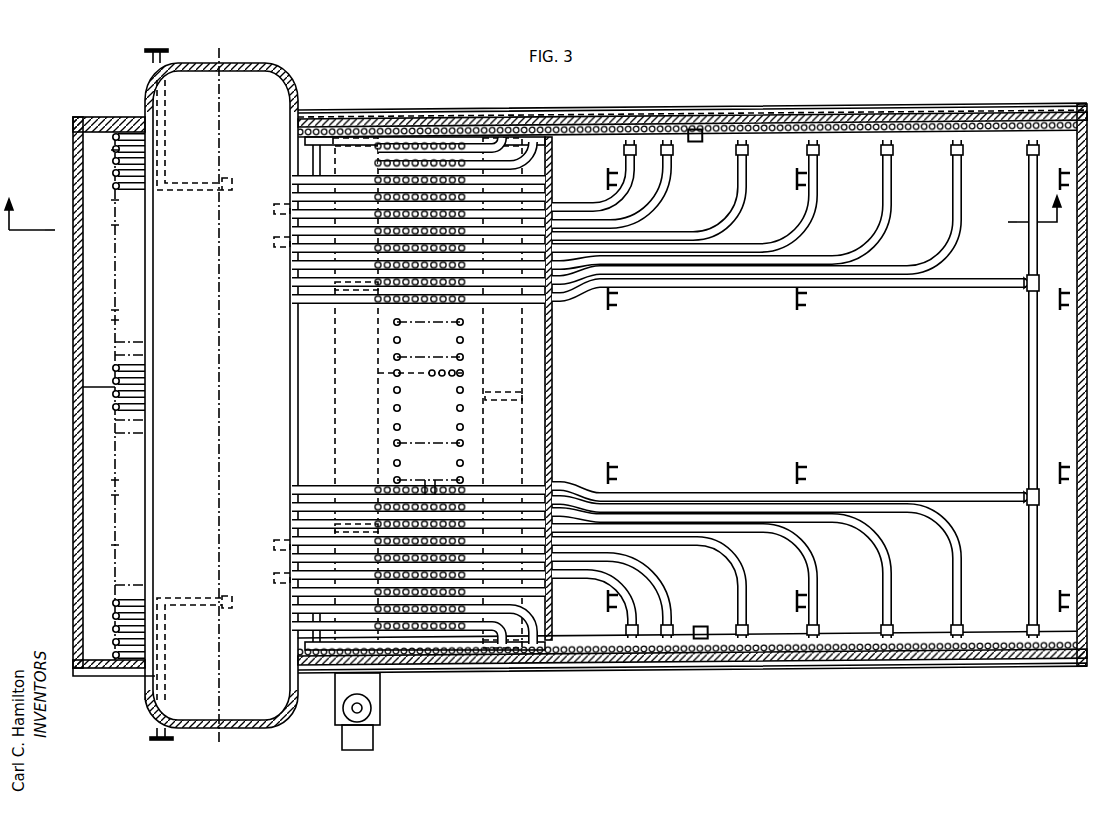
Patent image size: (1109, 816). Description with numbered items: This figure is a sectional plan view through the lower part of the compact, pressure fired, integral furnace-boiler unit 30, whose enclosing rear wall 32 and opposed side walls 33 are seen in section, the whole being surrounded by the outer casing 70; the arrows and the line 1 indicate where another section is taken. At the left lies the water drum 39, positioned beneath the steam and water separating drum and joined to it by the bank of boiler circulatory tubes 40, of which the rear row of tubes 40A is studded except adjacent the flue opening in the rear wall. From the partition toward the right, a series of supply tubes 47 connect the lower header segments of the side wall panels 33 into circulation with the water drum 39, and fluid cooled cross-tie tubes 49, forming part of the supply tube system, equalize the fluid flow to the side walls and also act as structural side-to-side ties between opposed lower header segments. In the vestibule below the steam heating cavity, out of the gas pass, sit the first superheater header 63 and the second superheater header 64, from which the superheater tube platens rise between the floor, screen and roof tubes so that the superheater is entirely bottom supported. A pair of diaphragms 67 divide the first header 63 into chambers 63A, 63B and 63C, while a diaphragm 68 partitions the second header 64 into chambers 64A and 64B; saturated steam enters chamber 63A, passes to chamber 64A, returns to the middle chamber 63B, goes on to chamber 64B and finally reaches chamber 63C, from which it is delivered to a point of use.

The section line 1- 1 is at (533, 226).
The furnace-boiler unit 30 is at (664, 678).
The rear wall 32 is at (73, 352).
The side walls 33 is at (694, 116).
The water drum 39 is at (255, 64).
The bank of boiler circulatory tubes 40 is at (136, 598).
The rear row of tubes 40A is at (160, 615).
The supply tubes 47 is at (668, 192).
The cross-tie tubes 49 is at (1028, 322).
The first superheater header 63 is at (375, 690).
The chamber 63A is at (367, 120).
The middle chamber 63B is at (360, 380).
The chamber 63C is at (340, 690).
The second superheater header 64 is at (480, 160).
The chamber 64A is at (552, 325).
The chamber 64B is at (552, 430).
The diaphragms 67 is at (358, 291).
The diaphragm 68 is at (522, 396).
The outer casing 70 is at (830, 665).